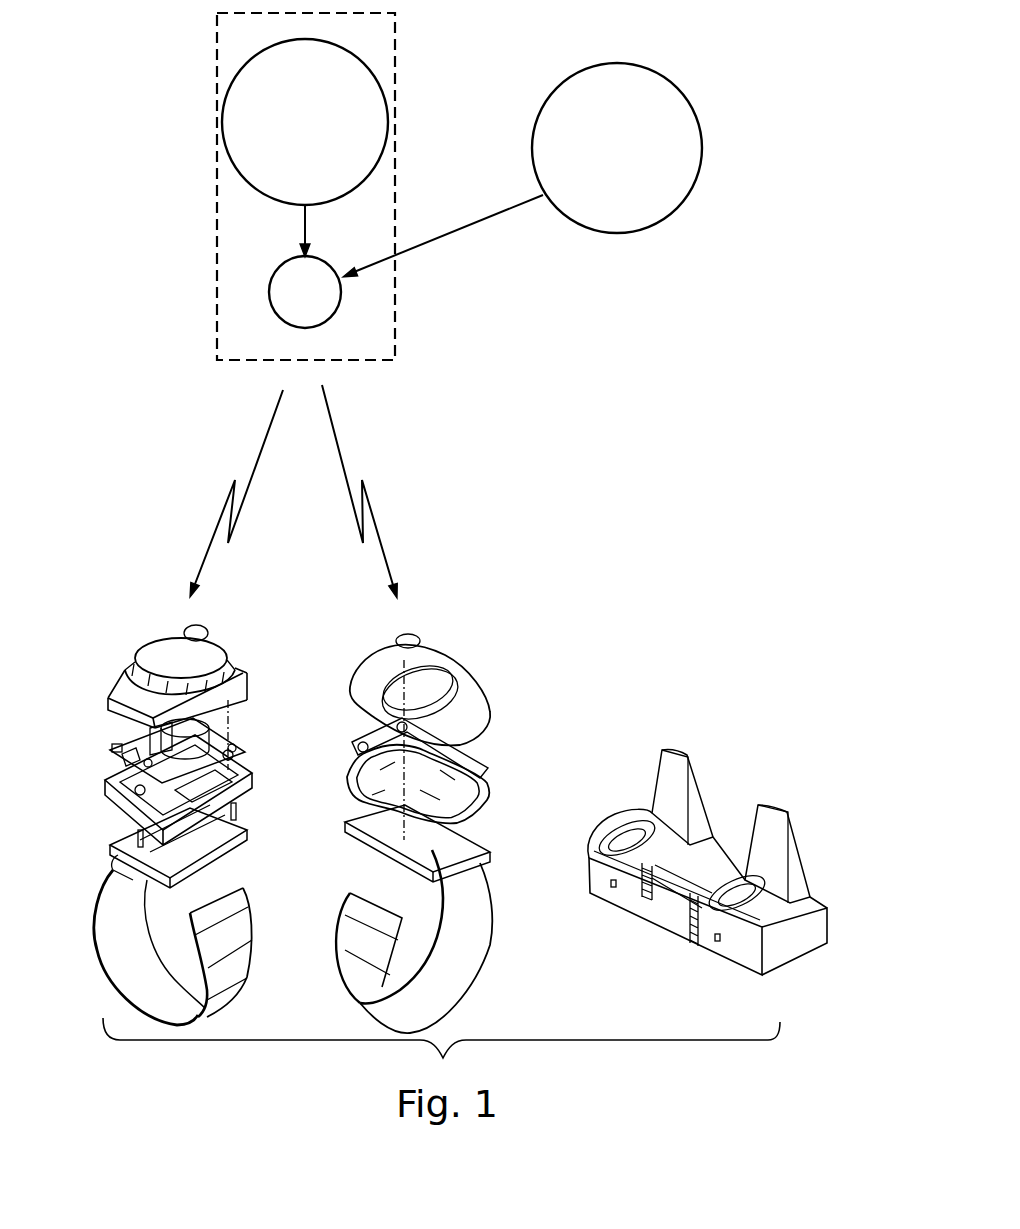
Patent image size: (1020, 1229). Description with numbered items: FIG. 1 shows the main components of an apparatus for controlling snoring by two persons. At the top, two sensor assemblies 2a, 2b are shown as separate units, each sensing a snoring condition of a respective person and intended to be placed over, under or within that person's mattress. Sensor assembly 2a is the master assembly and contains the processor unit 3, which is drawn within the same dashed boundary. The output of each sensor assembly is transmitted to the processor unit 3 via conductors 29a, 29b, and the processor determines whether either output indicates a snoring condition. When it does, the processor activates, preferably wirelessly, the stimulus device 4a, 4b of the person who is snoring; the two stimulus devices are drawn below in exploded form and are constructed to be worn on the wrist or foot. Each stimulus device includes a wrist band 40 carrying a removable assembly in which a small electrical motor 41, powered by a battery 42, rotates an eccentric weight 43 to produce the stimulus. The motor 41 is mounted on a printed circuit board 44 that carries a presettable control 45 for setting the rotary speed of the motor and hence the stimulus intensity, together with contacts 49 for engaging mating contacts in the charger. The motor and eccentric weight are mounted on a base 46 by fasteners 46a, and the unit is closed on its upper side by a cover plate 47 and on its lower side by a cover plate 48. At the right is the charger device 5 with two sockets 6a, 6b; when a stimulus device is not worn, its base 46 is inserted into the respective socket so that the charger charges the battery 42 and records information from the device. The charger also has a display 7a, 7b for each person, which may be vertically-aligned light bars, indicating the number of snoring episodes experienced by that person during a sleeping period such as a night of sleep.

The sensor assembly 2a is at (370, 62).
The sensor assembly 2b is at (685, 91).
The processor unit 3 is at (328, 322).
The conductor 29a is at (308, 227).
The conductor 29b is at (477, 228).
The stimulus device 4a is at (113, 659).
The stimulus device 4b is at (476, 648).
The charger device 5 is at (730, 748).
The socket 6a is at (625, 827).
The socket 6b is at (727, 873).
The display 7a is at (640, 905).
The display 7b is at (697, 935).
The wrist band 40 is at (250, 970).
The electrical motor 41 is at (233, 757).
The battery 42 is at (223, 832).
The eccentric weight 43 is at (225, 720).
The printed circuit board 44 is at (124, 756).
The presettable control 45 is at (148, 742).
The base 46 is at (120, 803).
The fasteners 46a is at (238, 808).
The cover plate 47 is at (128, 687).
The cover plate 48 is at (245, 853).
The contacts 49 is at (112, 747).